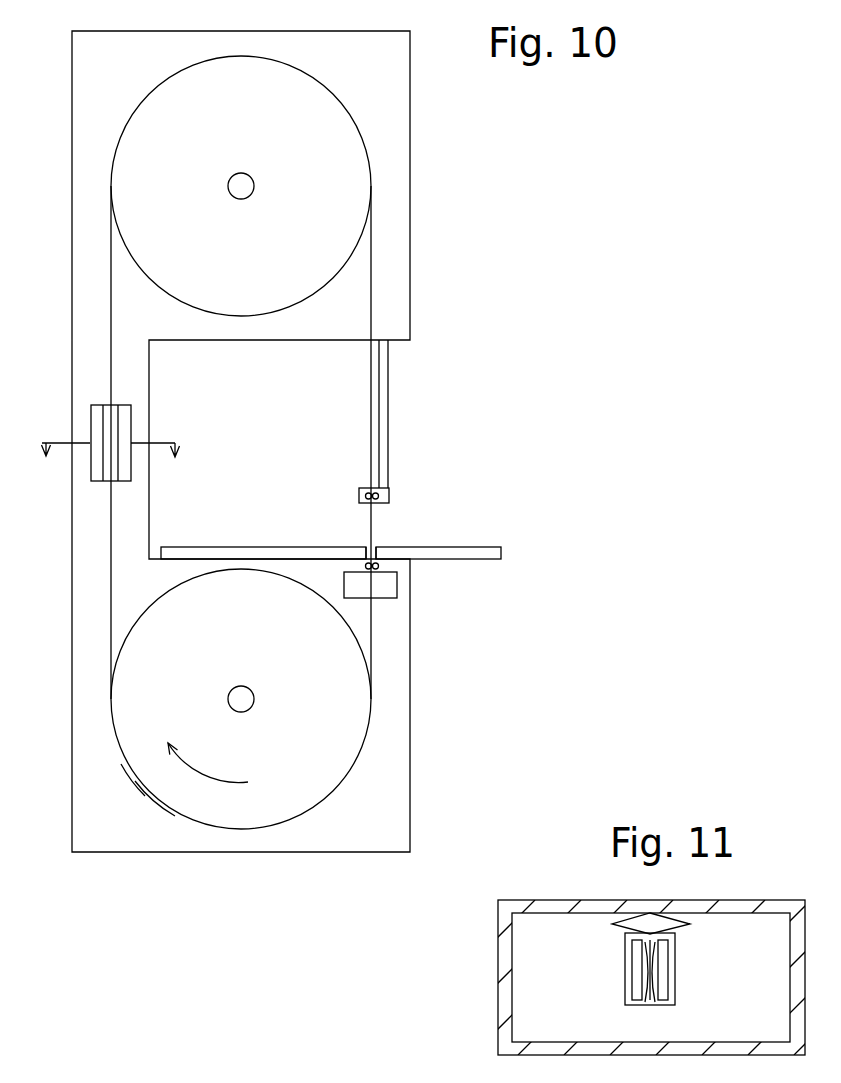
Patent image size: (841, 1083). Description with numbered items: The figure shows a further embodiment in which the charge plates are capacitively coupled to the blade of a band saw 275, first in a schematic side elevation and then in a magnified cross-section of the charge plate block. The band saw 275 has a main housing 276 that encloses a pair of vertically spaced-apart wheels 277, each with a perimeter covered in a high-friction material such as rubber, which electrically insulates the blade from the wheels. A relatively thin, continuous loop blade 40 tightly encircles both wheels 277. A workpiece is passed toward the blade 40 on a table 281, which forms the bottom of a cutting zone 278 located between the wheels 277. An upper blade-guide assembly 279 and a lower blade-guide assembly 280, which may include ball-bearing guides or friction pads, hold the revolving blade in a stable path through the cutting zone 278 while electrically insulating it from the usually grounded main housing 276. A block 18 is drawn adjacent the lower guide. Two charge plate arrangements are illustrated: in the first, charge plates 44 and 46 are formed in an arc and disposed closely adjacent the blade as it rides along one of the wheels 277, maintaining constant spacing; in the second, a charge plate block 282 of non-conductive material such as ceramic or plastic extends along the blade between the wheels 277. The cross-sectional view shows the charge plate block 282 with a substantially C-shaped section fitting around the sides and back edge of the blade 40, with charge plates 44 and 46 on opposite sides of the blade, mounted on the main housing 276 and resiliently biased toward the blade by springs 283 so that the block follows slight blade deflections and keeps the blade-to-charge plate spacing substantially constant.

In FIG. 10, the band saw 275 is at (445, 128).
In FIG. 10, the main housing 276 is at (412, 223).
In FIG. 11, the main housing 276 is at (498, 951).
In FIG. 10, the wheels 277 is at (241, 442).
In FIG. 10, the blade 40 is at (372, 522).
In FIG. 11, the blade 40 is at (649, 1002).
In FIG. 10, the charge plate block 282 is at (91, 427).
In FIG. 11, the charge plate block 282 is at (675, 948).
In FIG. 10, the upper blade-guide assembly 279 is at (390, 460).
In FIG. 10, the table 281 is at (460, 547).
In FIG. 10, the cutting zone 278 is at (347, 532).
In FIG. 10, the lower blade-guide assembly 280 is at (401, 567).
In FIG. 10, the block 18 is at (387, 598).
In FIG. 10, the charge plate 44 is at (133, 783).
In FIG. 11, the charge plate 44 is at (633, 972).
In FIG. 10, the charge plate 46 is at (162, 809).
In FIG. 11, the charge plate 46 is at (668, 972).
In FIG. 11, the springs 283 is at (612, 924).